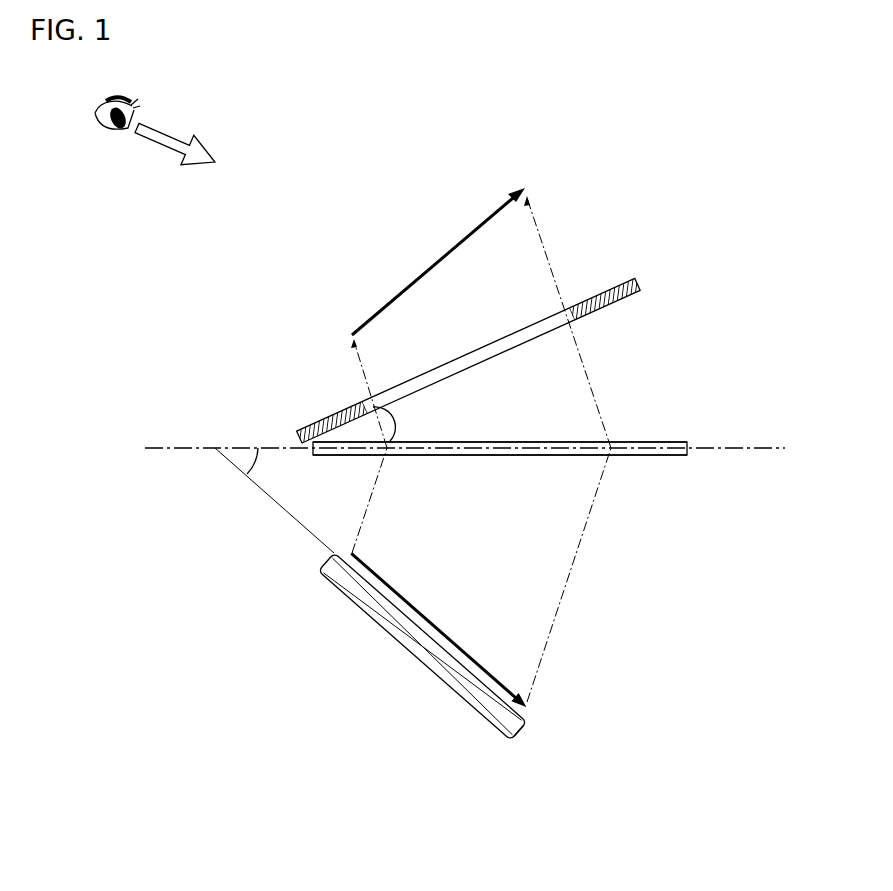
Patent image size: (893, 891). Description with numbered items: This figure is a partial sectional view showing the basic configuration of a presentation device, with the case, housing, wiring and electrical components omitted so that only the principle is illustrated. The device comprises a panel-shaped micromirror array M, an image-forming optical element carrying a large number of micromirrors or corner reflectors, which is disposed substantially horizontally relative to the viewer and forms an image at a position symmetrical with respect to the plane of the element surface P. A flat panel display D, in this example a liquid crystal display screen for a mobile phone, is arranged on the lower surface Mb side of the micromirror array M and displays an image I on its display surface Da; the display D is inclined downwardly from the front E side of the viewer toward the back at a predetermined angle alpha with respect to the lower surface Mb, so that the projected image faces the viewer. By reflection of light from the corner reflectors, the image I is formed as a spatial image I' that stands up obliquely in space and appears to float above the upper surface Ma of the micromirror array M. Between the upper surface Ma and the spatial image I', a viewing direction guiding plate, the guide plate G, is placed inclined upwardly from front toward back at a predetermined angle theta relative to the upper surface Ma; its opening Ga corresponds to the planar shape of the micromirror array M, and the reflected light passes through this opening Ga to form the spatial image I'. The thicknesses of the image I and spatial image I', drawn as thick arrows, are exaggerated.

The front side of the viewer E is at (158, 143).
The guide plate G is at (448, 317).
The opening Ga is at (368, 399).
The micromirror array M is at (633, 437).
The upper surface Ma is at (658, 441).
The lower surface Mb is at (658, 456).
The plane of the element surface P is at (737, 449).
The display D is at (477, 627).
The display surface Da is at (527, 708).
The image I is at (451, 617).
The spatial image I' is at (438, 261).